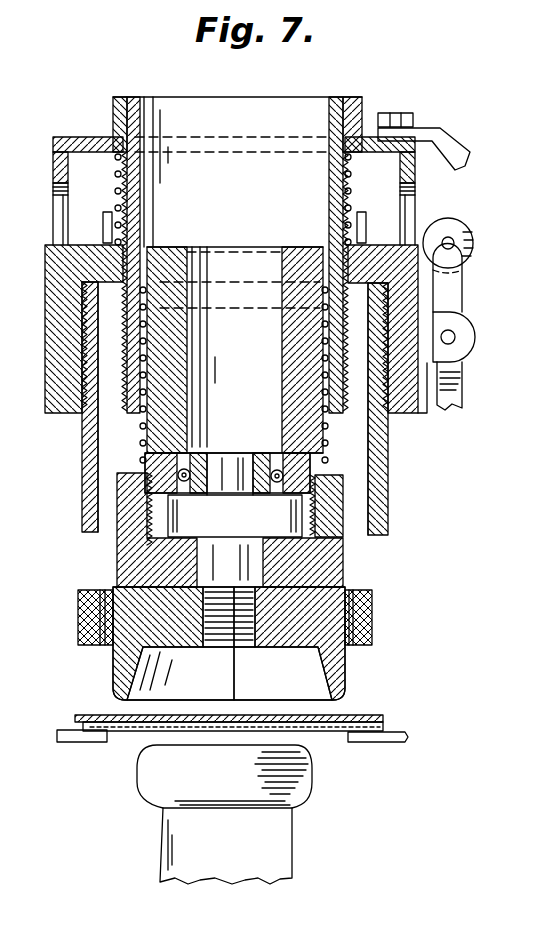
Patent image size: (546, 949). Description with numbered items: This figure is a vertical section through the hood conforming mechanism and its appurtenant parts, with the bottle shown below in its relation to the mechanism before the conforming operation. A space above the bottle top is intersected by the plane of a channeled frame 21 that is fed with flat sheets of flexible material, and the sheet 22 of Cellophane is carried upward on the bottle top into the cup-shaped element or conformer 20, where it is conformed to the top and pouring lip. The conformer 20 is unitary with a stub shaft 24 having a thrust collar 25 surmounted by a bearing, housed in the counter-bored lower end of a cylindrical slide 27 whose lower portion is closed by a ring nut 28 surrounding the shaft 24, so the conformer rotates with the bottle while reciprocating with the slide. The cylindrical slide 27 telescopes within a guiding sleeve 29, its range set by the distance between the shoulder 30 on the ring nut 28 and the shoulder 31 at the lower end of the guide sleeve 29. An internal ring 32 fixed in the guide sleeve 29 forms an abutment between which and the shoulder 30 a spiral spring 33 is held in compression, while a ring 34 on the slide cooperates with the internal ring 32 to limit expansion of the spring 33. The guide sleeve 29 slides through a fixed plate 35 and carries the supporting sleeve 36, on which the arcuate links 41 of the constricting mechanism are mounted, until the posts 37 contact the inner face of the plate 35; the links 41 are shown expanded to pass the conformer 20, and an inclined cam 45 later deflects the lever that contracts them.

The cup-shaped element 20 is at (320, 607).
The channeled frame 21 is at (82, 703).
The sheet 22 is at (140, 723).
The stub shaft 24 is at (257, 560).
The thrust collar 25 is at (305, 513).
The cylindrical slide 27 is at (192, 228).
The ring nut 28 is at (117, 558).
The guiding sleeve 29 is at (148, 85).
The shoulder 30 is at (357, 447).
The shoulder 31 is at (363, 387).
The internal ring 32 is at (233, 343).
The spiral spring 33 is at (140, 432).
The ring 34 is at (145, 247).
The fixed plate 35 is at (88, 120).
The supporting sleeve 36 is at (90, 320).
The posts 37 is at (112, 212).
The arcuate links 41 is at (370, 625).
The inclined cam 45 is at (435, 130).